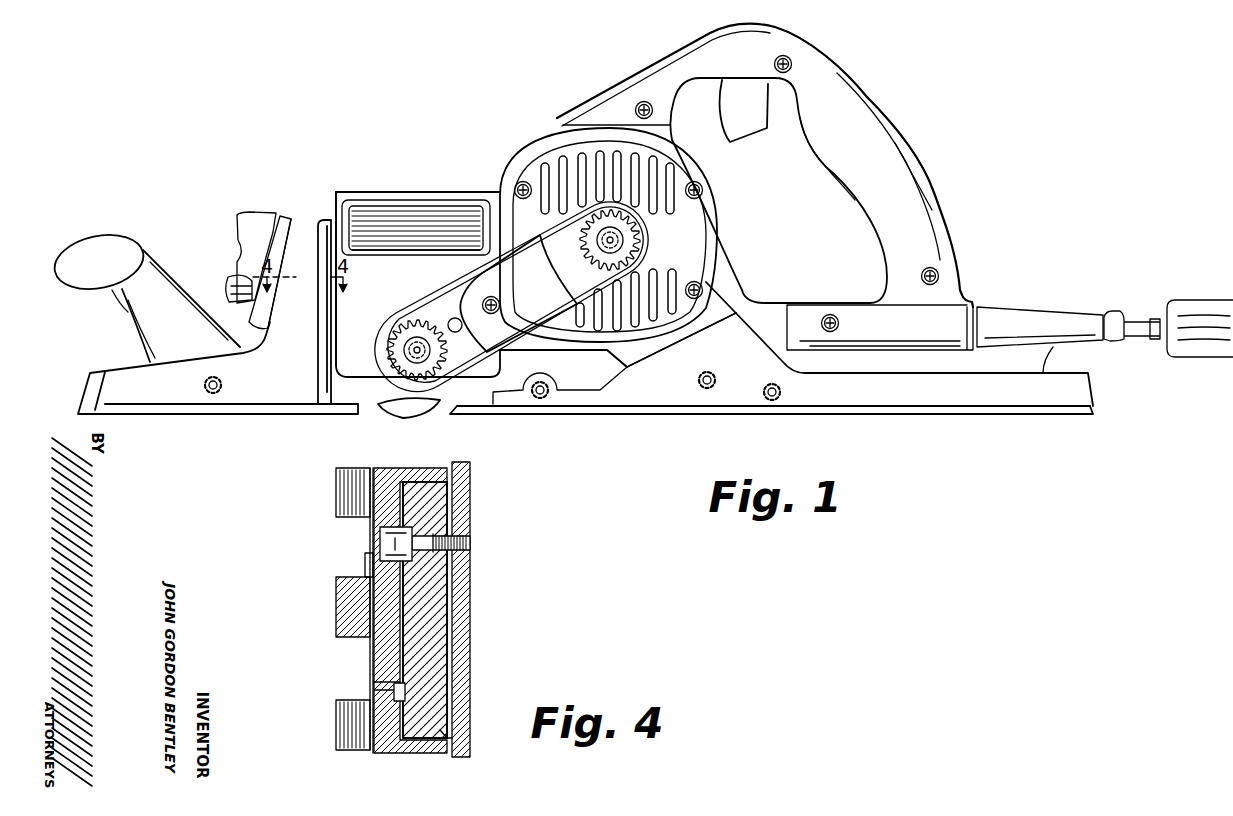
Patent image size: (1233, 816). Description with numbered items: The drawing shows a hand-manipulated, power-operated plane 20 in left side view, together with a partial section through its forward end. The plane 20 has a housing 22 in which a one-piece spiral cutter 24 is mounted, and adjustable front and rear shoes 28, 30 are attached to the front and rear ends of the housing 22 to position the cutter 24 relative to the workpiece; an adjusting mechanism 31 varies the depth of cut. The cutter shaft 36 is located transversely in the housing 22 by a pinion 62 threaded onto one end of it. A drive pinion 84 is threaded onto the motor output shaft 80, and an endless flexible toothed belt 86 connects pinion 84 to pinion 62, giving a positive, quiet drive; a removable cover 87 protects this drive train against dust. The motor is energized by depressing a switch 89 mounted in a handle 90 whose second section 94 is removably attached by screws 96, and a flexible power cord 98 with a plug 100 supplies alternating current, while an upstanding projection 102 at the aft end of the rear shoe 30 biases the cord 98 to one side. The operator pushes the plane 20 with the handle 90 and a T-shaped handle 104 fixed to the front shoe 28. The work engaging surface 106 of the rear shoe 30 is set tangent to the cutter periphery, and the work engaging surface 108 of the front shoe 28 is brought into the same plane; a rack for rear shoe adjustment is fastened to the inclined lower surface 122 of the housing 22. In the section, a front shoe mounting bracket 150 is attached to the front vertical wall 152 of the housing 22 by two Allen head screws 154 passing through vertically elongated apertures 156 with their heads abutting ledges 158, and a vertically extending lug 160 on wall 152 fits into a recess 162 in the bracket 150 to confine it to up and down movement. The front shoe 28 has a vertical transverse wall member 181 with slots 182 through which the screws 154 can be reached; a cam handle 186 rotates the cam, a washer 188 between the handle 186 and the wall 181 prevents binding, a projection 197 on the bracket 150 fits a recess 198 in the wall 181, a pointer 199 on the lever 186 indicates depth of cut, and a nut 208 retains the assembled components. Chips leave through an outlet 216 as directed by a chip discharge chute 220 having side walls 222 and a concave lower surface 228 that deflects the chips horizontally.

In FIG. 1, the plane 20 is at (472, 139).
In FIG. 1, the housing 22 is at (557, 119).
In FIG. 4, the housing 22 is at (472, 500).
In FIG. 1, the cutter 24 is at (436, 406).
In FIG. 1, the front shoe 28 is at (209, 426).
In FIG. 1, the rear shoe 30 is at (843, 421).
In FIG. 1, the adjusting mechanism 31 is at (235, 258).
In FIG. 1, the shaft 36 is at (404, 352).
In FIG. 1, the pinion 62 is at (410, 318).
In FIG. 1, the motor output shaft 80 is at (623, 240).
In FIG. 1, the drive pinion 84 is at (626, 251).
In FIG. 1, the toothed belt 86 is at (565, 233).
In FIG. 1, the removable cover 87 is at (507, 316).
In FIG. 1, the switch 89 is at (727, 118).
In FIG. 1, the handle 90 is at (897, 140).
In FIG. 1, the handle section 94 is at (935, 214).
In FIG. 1, the screws 96 is at (645, 102).
In FIG. 1, the power cord 98 is at (1017, 311).
In FIG. 1, the plug 100 is at (1216, 298).
In FIG. 1, the projection 102 is at (1063, 305).
In FIG. 1, the T-shaped handle 104 is at (118, 237).
In FIG. 1, the work engaging surface 106 is at (733, 412).
In FIG. 1, the work engaging surface 108 is at (293, 413).
In FIG. 1, the inclined lower surface 122 is at (690, 338).
In FIG. 1, the front shoe mounting bracket 150 is at (324, 381).
In FIG. 4, the front shoe mounting bracket 150 is at (440, 590).
In FIG. 1, the front vertical wall 152 is at (333, 205).
In FIG. 4, the front vertical wall 152 is at (443, 630).
In FIG. 4, the Allen head screws 154 is at (413, 542).
In FIG. 4, the apertures 156 is at (378, 529).
In FIG. 4, the ledges 158 is at (440, 561).
In FIG. 4, the lug 160 is at (445, 664).
In FIG. 4, the recess 162 is at (443, 696).
In FIG. 4, the vertical transverse wall member 181 is at (360, 678).
In FIG. 4, the slots 182 is at (365, 556).
In FIG. 1, the handle 186 is at (257, 213).
In FIG. 4, the handle 186 is at (342, 608).
In FIG. 1, the washer 188 is at (274, 313).
In FIG. 4, the washer 188 is at (366, 643).
In FIG. 4, the projection 197 is at (384, 689).
In FIG. 4, the recess 198 is at (400, 689).
In FIG. 1, the pointer 199 is at (289, 219).
In FIG. 1, the nut 208 is at (228, 280).
In FIG. 1, the outlet 216 is at (377, 200).
In FIG. 1, the chip discharge chute 220 is at (435, 202).
In FIG. 1, the side walls 222 is at (416, 228).
In FIG. 1, the concave lower surface 228 is at (463, 256).